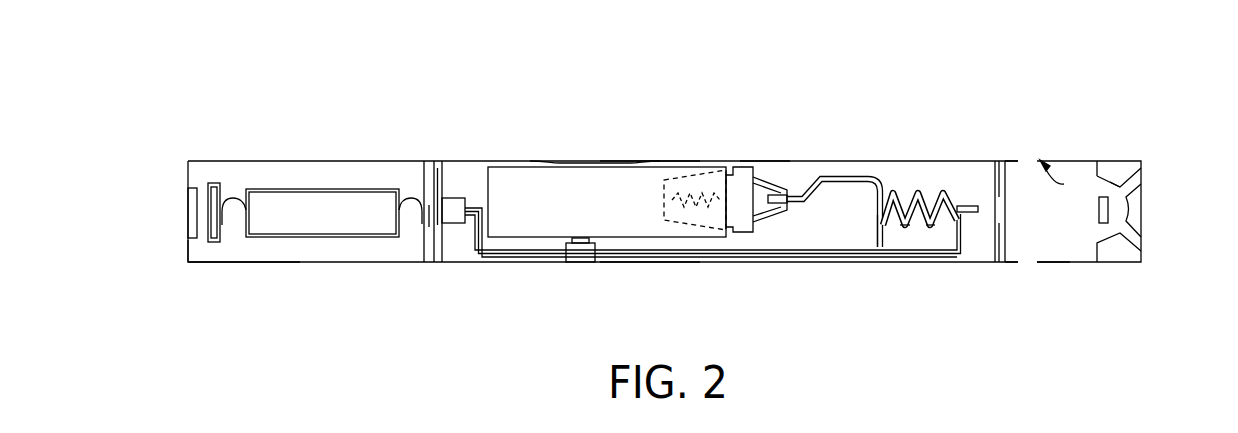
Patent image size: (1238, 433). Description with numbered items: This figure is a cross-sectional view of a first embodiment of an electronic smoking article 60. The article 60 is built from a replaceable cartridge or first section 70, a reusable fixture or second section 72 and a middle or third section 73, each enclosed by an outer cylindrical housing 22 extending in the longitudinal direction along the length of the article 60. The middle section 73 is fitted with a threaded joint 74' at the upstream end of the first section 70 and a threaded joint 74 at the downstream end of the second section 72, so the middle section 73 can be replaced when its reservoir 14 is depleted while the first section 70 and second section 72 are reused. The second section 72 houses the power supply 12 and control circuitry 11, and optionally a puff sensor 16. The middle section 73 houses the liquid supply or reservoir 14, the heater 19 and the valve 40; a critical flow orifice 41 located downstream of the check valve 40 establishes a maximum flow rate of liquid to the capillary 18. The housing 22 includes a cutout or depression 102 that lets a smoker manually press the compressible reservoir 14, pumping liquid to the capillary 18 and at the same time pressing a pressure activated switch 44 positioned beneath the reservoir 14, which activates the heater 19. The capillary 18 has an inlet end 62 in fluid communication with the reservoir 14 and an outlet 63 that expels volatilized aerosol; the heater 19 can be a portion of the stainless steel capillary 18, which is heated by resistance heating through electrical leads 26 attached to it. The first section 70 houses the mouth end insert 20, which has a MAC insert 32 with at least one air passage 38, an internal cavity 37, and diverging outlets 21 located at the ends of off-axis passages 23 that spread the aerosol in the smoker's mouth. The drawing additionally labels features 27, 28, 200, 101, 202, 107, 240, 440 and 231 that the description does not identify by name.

The electronic smoking article 60 is at (582, 93).
The reusable fixture (second section) 72 is at (343, 161).
The threaded joint 74 is at (422, 185).
The threaded joint 74' is at (1018, 159).
The end cap 27 is at (188, 210).
The housing end 28 is at (188, 250).
The control circuitry 11 is at (213, 242).
The power supply 12 is at (260, 188).
The cutout or depression 102 is at (553, 161).
The liquid supply (reservoir) 14 is at (618, 187).
The pressure activated switch 44 is at (582, 240).
The electrical leads 26 is at (812, 257).
The outer cylindrical housing 22 is at (663, 161).
The valve 40 is at (703, 224).
The critical flow orifice 41 is at (741, 193).
The puff sensor 16 is at (789, 192).
The middle section (third section) 73 is at (758, 161).
The inlet end 62 is at (811, 184).
The conduit top portion 200 is at (848, 176).
The conduit outlet 101 is at (877, 222).
The capillary (capillary tube) 18 is at (918, 192).
The heater 19 is at (923, 223).
The heater portion 202 is at (938, 223).
The contact 107 is at (976, 214).
The outlet 63 is at (972, 205).
The replaceable cartridge (first section) 70 is at (1011, 161).
The mouth end insert 20 is at (1141, 212).
The mouthpiece wall 240 is at (1042, 240).
The air flow arrow 440 is at (1025, 158).
The off-axis passages 23 is at (1136, 177).
The air passage 38 is at (1097, 161).
The channel bottom 231 is at (1097, 187).
The outlet passage 21 is at (1141, 183).
The MAC insert 32 is at (1099, 212).
The cavity 37 is at (1115, 218).